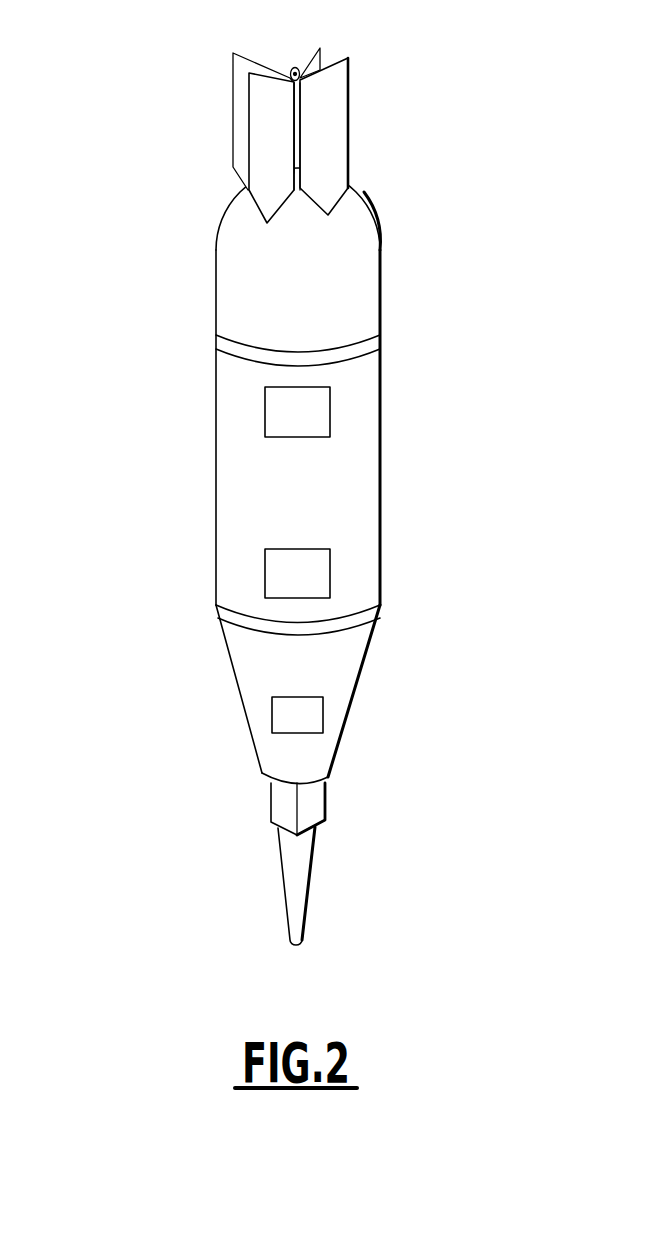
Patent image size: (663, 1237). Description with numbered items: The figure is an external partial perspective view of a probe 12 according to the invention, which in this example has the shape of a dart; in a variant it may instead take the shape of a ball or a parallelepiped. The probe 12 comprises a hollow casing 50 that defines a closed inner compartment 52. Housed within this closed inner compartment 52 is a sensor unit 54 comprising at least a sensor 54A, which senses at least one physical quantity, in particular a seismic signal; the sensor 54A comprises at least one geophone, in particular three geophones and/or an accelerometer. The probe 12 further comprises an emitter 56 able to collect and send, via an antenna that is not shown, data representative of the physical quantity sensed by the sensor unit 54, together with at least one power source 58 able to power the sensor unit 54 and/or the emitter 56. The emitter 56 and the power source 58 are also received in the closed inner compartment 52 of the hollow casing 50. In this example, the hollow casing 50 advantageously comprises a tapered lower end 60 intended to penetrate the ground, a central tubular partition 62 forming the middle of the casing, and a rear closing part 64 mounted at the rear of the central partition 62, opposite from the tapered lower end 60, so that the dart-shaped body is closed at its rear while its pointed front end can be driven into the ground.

The probe 12 is at (295, 496).
The hollow casing 50 is at (255, 496).
The closed inner compartment 52 is at (302, 442).
The sensor unit 54 is at (258, 661).
The sensor 54A is at (297, 716).
The emitter 56 is at (276, 571).
The power source 58 is at (282, 412).
The tapered lower end 60 is at (228, 825).
The central tubular partition 62 is at (380, 528).
The rear closing part 64 is at (380, 232).